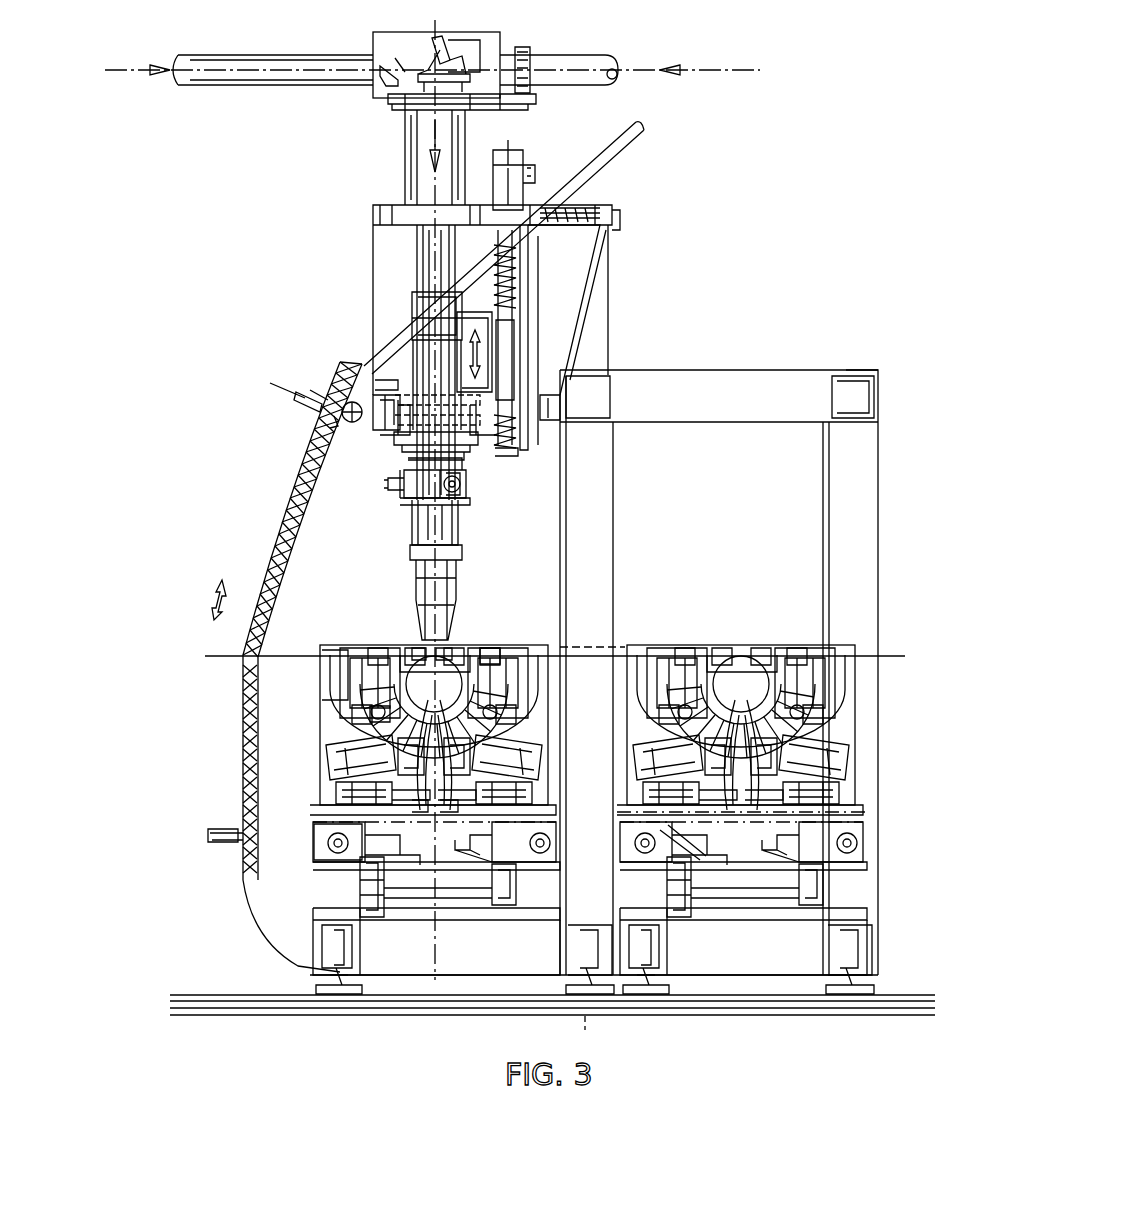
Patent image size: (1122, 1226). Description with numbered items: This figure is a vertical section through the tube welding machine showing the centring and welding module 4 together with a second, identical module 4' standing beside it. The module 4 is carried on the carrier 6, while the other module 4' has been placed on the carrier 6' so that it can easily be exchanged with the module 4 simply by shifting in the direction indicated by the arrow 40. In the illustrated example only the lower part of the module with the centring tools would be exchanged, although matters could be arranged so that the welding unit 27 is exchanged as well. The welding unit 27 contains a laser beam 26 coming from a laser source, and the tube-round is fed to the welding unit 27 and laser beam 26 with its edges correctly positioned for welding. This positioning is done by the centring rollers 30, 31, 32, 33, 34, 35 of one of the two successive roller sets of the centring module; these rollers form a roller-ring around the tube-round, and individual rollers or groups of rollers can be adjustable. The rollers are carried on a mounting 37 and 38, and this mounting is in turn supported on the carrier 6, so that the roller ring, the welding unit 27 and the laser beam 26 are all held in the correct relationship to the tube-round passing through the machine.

The laser beam 26 is at (636, 64).
The welding unit 27 is at (448, 590).
The centring roller 30 is at (420, 648).
The centring roller 31 is at (446, 648).
The centring roller 32 is at (490, 650).
The centring roller 33 is at (450, 808).
The centring roller 34 is at (422, 808).
The centring roller 35 is at (372, 712).
The mounting 37 is at (328, 696).
The mounting 38 is at (322, 842).
The centring and welding module 4 is at (402, 727).
The centring and welding module 4' is at (741, 690).
The carrier 6 is at (435, 899).
The carrier 6' is at (742, 899).
The arrow 40 is at (568, 705).